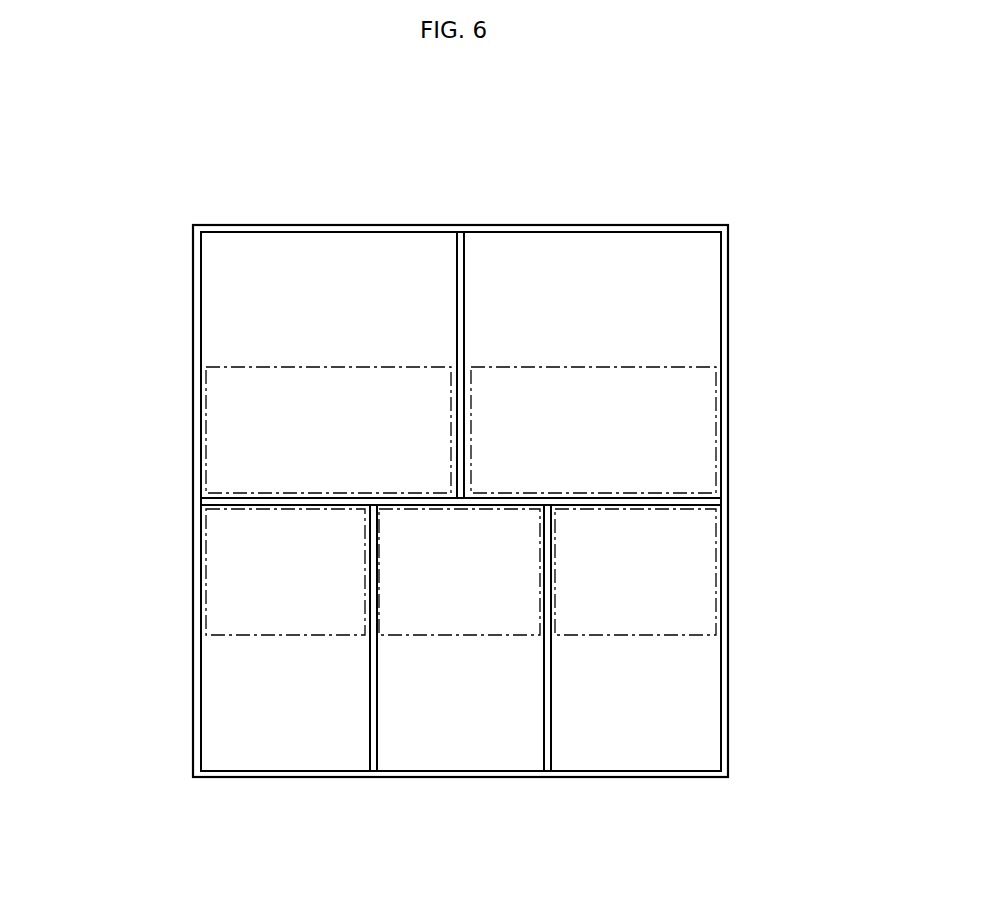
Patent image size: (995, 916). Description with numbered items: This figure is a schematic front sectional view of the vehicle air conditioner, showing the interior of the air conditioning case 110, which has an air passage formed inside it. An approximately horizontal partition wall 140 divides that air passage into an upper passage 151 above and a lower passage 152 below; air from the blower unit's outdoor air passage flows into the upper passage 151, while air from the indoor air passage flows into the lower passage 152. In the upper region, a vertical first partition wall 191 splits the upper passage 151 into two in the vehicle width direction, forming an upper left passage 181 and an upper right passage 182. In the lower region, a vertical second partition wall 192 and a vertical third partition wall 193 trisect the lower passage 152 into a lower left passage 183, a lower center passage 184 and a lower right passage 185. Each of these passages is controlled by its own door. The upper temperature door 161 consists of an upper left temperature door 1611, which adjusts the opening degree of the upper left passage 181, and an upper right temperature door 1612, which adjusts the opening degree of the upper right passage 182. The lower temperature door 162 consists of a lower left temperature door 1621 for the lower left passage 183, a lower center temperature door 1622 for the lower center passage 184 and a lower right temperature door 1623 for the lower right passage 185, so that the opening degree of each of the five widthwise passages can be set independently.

The air conditioning case 110 is at (724, 296).
The partition wall 140 is at (645, 503).
The upper passage 151 is at (553, 140).
The lower passage 152 is at (583, 857).
The upper temperature door 161 is at (460, 430).
The upper left temperature door 1611 is at (206, 428).
The upper right temperature door 1612 is at (716, 432).
The lower temperature door 162 is at (460, 598).
The lower left temperature door 1621 is at (206, 572).
The lower center temperature door 1622 is at (460, 635).
The lower right temperature door 1623 is at (717, 573).
The upper left passage 181 is at (378, 258).
The upper right passage 182 is at (548, 257).
The lower left passage 183 is at (348, 745).
The lower center passage 184 is at (468, 745).
The lower right passage 185 is at (581, 745).
The first partition wall 191 is at (460, 320).
The second partition wall 192 is at (373, 710).
The third partition wall 193 is at (548, 695).